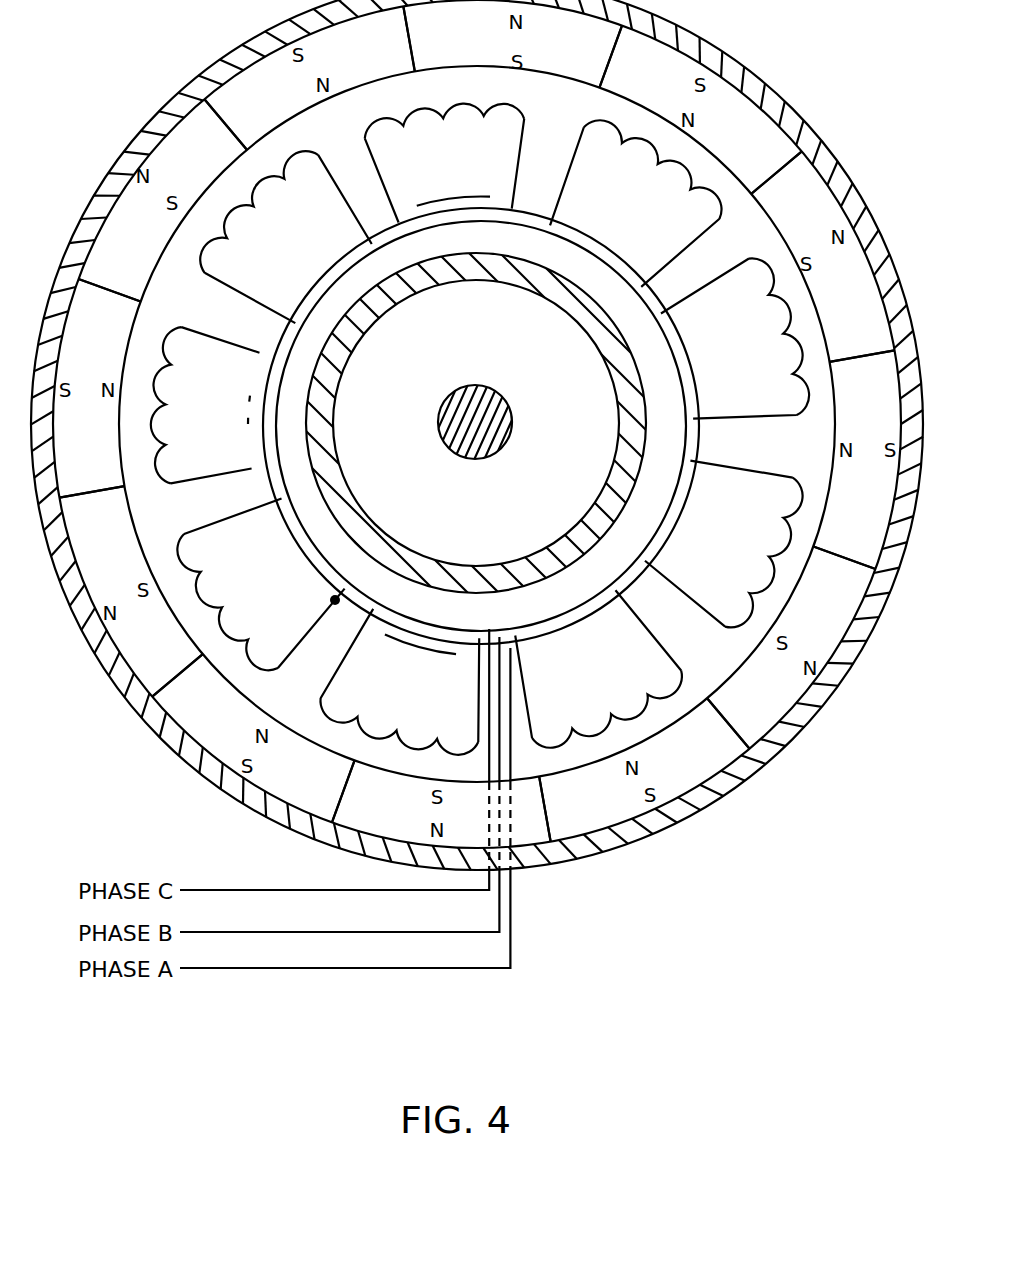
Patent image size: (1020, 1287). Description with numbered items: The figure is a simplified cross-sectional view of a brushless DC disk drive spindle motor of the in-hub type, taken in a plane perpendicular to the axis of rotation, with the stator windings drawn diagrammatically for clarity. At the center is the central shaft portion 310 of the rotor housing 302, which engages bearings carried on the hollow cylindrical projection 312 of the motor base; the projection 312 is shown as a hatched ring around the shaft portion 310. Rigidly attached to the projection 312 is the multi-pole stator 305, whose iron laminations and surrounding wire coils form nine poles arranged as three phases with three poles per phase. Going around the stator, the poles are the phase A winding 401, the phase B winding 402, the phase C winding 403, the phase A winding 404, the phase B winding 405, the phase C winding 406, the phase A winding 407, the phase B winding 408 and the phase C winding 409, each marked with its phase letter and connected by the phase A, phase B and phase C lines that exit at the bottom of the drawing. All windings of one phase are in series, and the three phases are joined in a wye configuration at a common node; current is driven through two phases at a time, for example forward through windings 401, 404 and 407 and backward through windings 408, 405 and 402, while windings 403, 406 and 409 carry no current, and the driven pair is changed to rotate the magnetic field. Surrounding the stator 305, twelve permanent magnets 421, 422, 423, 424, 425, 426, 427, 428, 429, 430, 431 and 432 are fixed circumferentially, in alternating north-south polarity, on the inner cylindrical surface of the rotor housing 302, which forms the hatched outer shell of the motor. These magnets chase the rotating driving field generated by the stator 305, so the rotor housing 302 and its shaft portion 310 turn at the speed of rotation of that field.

The rotor housing 302 is at (676, 29).
The multi-pole stator 305 is at (722, 269).
The central shaft portion 310 is at (498, 452).
The hollow cylindrical projection 312 is at (614, 454).
The phase A winding 401 is at (577, 689).
The phase B winding 402 is at (732, 594).
The phase C winding 403 is at (762, 402).
The phase A winding 404 is at (680, 249).
The phase B winding 405 is at (517, 142).
The phase C winding 406 is at (322, 212).
The phase A winding 407 is at (227, 384).
The phase B winding 408 is at (255, 562).
The phase C winding 409 is at (394, 699).
The permanent magnet 421 is at (717, 753).
The permanent magnet 422 is at (862, 582).
The permanent magnet 423 is at (882, 380).
The permanent magnet 424 is at (807, 203).
The permanent magnet 425 is at (660, 87).
The permanent magnet 426 is at (460, 37).
The permanent magnet 427 is at (262, 115).
The permanent magnet 428 is at (127, 287).
The permanent magnet 429 is at (117, 335).
The permanent magnet 430 is at (112, 533).
The permanent magnet 431 is at (207, 713).
The permanent magnet 432 is at (397, 805).